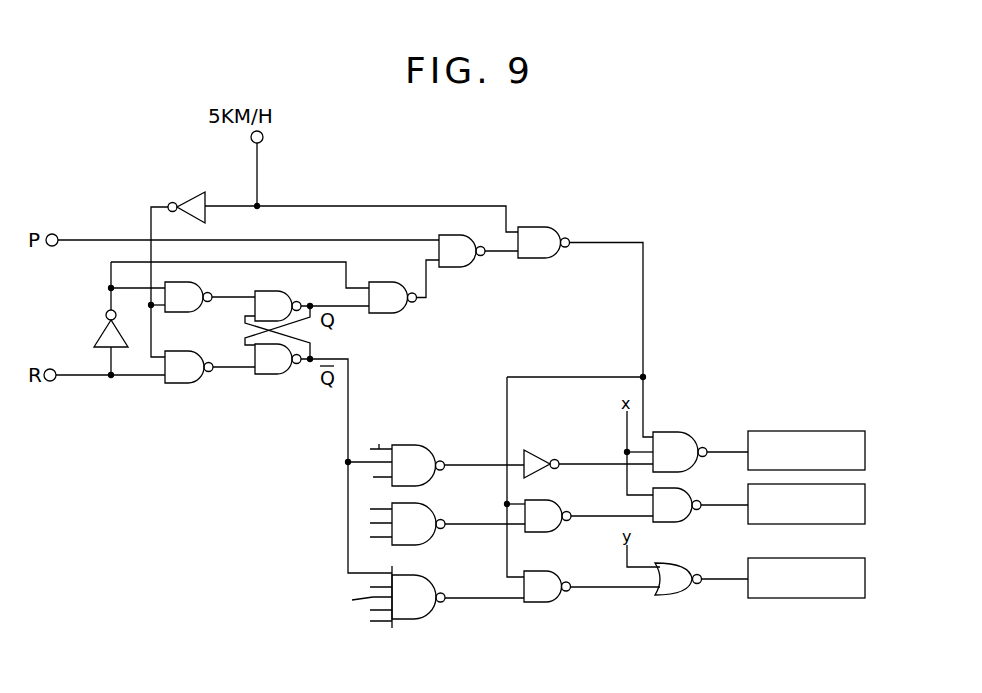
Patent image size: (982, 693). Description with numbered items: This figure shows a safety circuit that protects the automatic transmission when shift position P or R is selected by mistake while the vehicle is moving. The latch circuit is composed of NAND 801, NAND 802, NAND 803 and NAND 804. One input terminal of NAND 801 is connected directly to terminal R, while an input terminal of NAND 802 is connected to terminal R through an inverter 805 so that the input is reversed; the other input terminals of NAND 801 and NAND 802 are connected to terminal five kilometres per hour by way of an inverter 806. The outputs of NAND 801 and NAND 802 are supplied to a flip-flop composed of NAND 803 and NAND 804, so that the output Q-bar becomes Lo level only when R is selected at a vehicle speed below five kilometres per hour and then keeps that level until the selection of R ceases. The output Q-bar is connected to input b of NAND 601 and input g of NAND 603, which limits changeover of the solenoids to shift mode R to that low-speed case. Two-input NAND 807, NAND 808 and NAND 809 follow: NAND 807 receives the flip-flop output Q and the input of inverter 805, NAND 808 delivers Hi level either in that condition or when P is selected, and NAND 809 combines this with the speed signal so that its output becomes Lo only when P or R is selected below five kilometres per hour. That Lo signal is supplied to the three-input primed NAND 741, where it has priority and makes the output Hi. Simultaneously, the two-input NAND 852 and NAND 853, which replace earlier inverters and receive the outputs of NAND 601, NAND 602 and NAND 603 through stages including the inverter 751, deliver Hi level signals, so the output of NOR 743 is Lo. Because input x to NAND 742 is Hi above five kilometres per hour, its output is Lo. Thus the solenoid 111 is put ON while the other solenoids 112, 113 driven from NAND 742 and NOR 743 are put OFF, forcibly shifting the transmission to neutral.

The NAND 801 is at (176, 383).
The NAND 802 is at (197, 282).
The NAND 803 is at (266, 374).
The NAND 804 is at (283, 291).
The inverter 805 is at (97, 334).
The inverter 806 is at (197, 192).
The two-input NAND 807 is at (382, 313).
The two-input NAND 808 is at (452, 267).
The two-input NAND 809 is at (548, 227).
The NAND 601 is at (431, 447).
The NAND 602 is at (432, 504).
The NAND 603 is at (434, 578).
The inverter 751 is at (538, 452).
The two-input NAND 852 is at (560, 502).
The two-input NAND 853 is at (556, 602).
The three-input NAND 741 is at (678, 432).
The NAND 742 is at (674, 522).
The NOR 743 is at (674, 595).
The solenoid 111 is at (806, 431).
The solenoid 112 is at (748, 490).
The solenoid 113 is at (800, 598).